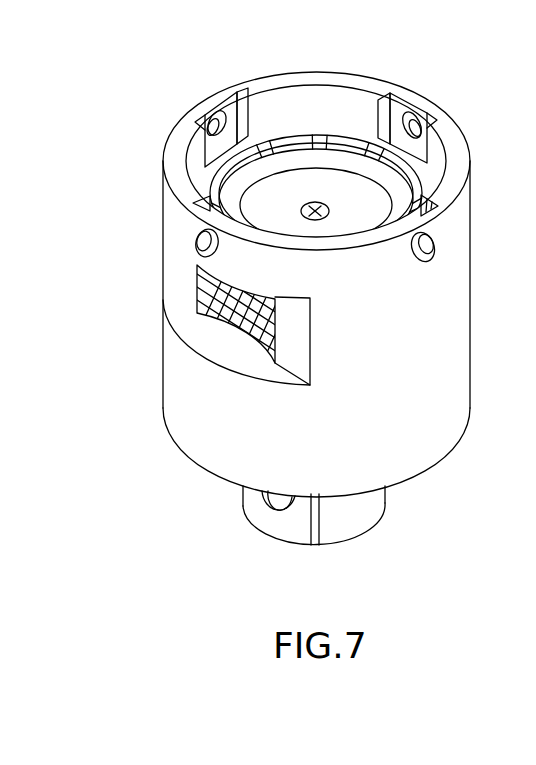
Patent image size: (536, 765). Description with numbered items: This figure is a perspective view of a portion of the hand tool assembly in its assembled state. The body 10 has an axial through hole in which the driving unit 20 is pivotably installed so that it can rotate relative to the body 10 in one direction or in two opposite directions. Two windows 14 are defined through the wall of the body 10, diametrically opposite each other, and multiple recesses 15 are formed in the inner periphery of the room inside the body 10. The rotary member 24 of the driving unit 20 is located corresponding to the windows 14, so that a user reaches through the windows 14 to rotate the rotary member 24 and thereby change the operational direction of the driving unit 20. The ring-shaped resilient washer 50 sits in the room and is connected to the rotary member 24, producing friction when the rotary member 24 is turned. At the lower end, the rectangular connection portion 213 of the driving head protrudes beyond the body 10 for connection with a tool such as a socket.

The body 10 is at (457, 402).
The windows 14 is at (172, 265).
The recesses 15 is at (398, 108).
The driving unit 20 is at (228, 203).
The rotary member 24 is at (200, 309).
The resilient washer 50 is at (295, 138).
The connection portion 213 is at (362, 515).